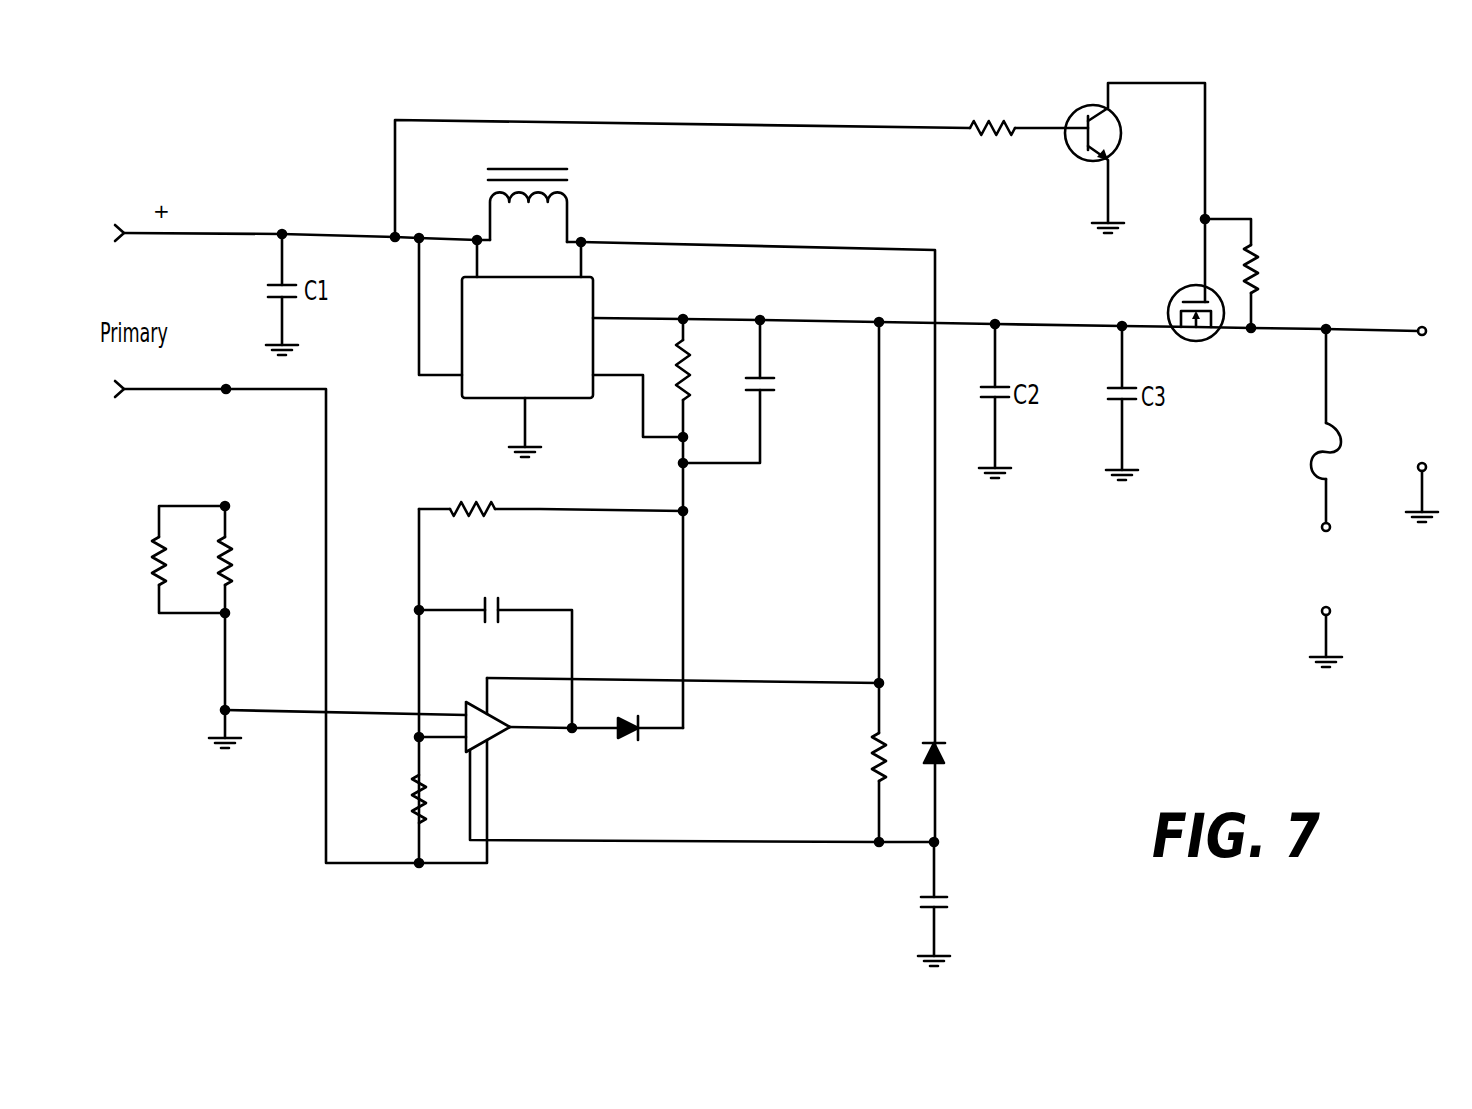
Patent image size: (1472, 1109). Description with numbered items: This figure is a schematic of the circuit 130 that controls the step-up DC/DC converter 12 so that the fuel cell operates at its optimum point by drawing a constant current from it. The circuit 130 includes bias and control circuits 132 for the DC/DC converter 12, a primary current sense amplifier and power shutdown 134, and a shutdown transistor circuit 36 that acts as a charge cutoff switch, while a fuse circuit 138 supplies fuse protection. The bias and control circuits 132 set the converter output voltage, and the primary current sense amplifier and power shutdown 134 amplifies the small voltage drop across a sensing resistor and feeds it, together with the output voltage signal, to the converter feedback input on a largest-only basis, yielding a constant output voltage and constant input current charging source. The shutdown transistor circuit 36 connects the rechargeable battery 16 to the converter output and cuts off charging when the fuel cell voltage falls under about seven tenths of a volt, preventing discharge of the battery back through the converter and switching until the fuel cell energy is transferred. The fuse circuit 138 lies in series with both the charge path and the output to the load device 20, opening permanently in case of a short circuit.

The DC DC converter 12 is at (609, 296).
The shutdown transistor circuit 36 is at (1050, 232).
The bias and control circuits 132 is at (742, 496).
The fuse circuit 138 is at (1256, 466).
The circuit 130 is at (313, 902).
The primary current sense amplifier and power shutdown 134 is at (654, 886).
The device 20 is at (1423, 447).
The rechargeable battery 16 is at (1334, 498).